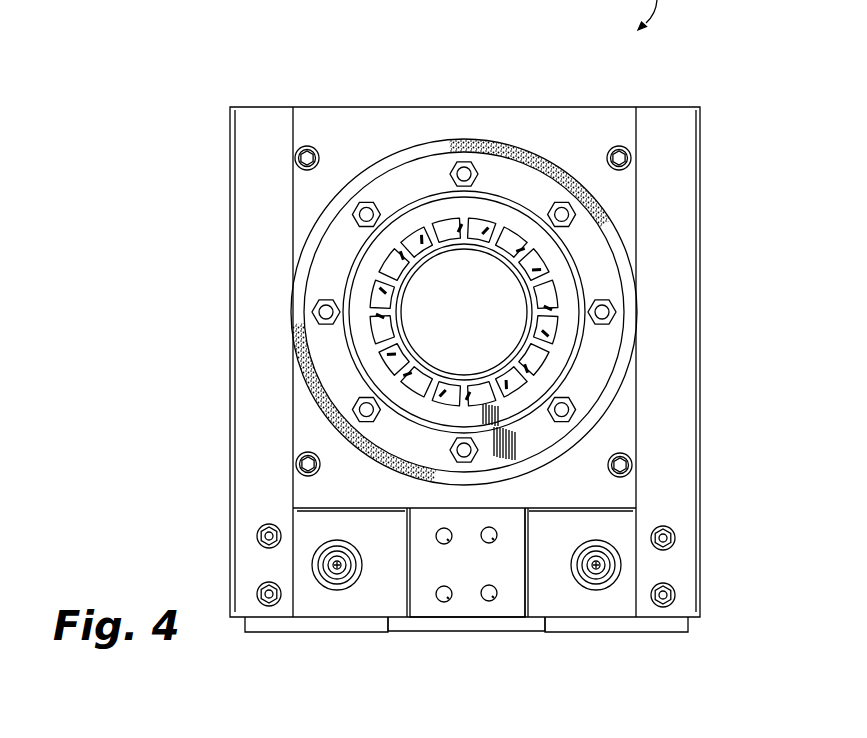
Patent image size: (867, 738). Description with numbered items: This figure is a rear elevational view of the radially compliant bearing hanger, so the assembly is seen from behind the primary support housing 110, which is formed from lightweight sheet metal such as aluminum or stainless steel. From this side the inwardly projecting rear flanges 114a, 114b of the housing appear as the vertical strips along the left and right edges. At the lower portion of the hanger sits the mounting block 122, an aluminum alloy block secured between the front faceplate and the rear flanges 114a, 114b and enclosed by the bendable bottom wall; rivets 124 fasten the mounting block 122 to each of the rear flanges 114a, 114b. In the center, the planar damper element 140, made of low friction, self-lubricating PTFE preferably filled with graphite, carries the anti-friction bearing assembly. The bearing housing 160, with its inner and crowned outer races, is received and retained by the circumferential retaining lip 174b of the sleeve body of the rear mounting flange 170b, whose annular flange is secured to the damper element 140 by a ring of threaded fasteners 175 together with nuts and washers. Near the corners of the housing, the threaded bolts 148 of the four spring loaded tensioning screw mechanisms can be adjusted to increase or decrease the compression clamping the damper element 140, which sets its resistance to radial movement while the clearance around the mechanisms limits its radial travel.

The primary support housing 110 is at (398, 107).
The rear flange 114a is at (689, 172).
The rear flange 114b is at (243, 177).
The mounting block 122 is at (485, 617).
The rivets 124 is at (673, 538).
The planar damper element 140 is at (566, 178).
The threaded bolt 148 is at (633, 460).
The bearing housing 160 is at (426, 262).
The rear mounting flange 170b is at (505, 183).
The circumferential retaining lip 174b is at (565, 346).
The threaded fasteners 175 is at (314, 315).